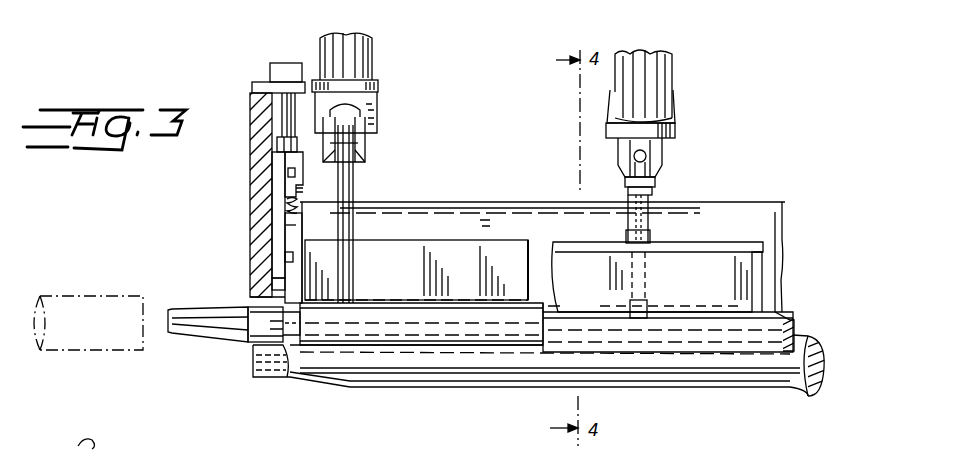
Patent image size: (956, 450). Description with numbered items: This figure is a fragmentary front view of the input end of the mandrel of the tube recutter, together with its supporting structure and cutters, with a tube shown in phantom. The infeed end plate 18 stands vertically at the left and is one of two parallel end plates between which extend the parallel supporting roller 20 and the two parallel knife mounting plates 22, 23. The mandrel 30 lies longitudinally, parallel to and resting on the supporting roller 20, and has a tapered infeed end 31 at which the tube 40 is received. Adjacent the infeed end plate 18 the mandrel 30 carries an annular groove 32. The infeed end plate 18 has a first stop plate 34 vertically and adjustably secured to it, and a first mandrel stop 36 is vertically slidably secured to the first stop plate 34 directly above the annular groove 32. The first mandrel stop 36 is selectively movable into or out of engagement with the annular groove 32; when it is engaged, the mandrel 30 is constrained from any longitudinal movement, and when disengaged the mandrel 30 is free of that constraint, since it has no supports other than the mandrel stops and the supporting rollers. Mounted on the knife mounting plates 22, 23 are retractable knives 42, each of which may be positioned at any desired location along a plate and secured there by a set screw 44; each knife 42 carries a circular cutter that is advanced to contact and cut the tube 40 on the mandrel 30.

The infeed end plate 18 is at (256, 128).
The supporting roller 20 is at (257, 362).
The knife mounting plate 22 is at (405, 255).
The knife mounting plate 23 is at (743, 272).
The mandrel 30 is at (248, 307).
The tapered infeed end 31 is at (188, 312).
The annular groove 32 is at (290, 352).
The first stop plate 34 is at (283, 173).
The first mandrel stop 36 is at (294, 228).
The tube 40 is at (728, 344).
The retractable knife 42 is at (378, 90).
The set screw 44 is at (662, 150).